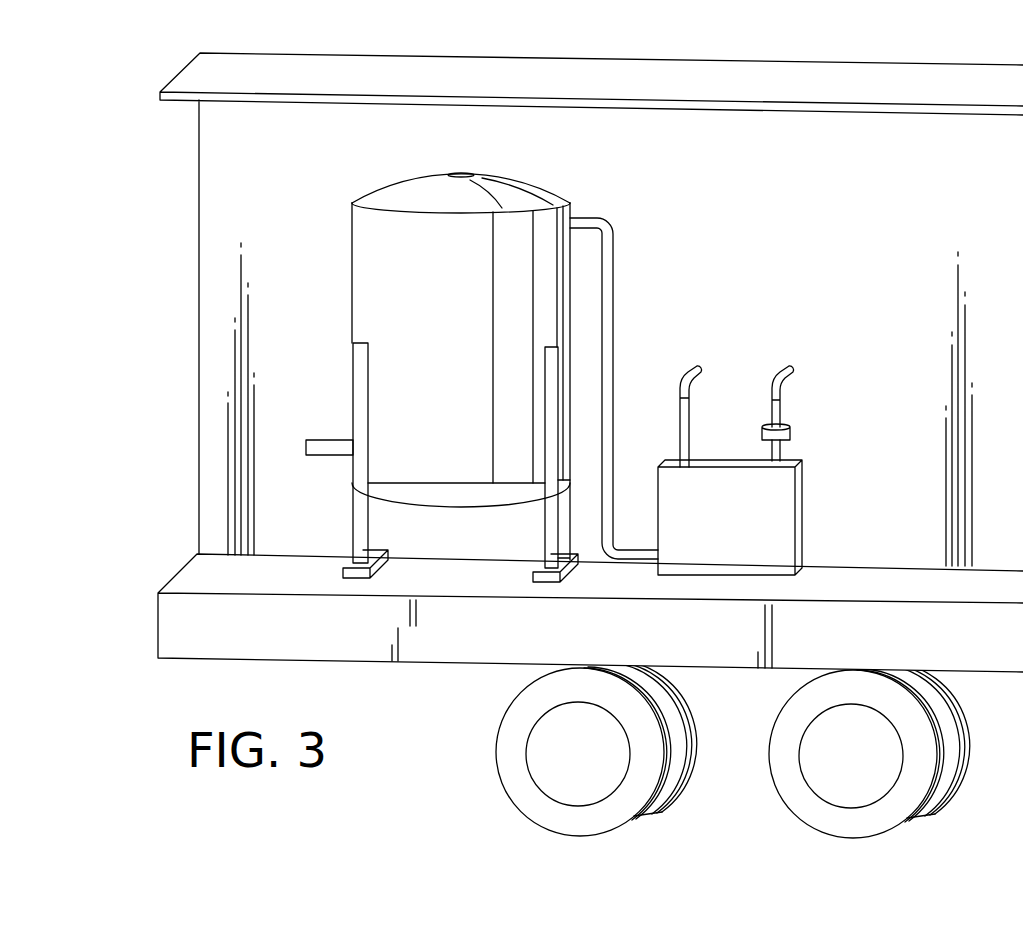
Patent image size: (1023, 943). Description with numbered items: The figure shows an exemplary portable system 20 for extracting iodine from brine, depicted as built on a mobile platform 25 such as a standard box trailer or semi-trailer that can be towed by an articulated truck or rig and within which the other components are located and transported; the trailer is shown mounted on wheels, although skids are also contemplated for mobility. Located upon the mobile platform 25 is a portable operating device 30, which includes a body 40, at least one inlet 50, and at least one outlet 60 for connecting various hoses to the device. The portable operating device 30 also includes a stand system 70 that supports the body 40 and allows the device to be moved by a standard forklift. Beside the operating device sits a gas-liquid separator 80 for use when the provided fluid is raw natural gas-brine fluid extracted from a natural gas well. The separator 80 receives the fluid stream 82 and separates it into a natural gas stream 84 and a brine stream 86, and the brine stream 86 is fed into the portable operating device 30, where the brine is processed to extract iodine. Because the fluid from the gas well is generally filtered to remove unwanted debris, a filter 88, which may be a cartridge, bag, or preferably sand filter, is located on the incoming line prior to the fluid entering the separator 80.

The system 20 is at (213, 72).
The mobile platform 25 is at (466, 665).
The portable operating device 30 is at (433, 292).
The body 40 is at (370, 300).
The inlet 50 is at (548, 205).
The outlet 60 is at (343, 443).
The stand system 70 is at (350, 578).
The gas-liquid separator 80 is at (778, 505).
The fluid stream 82 is at (777, 390).
The natural gas stream 84 is at (683, 390).
The brine stream 86 is at (612, 315).
The filter 88 is at (790, 432).